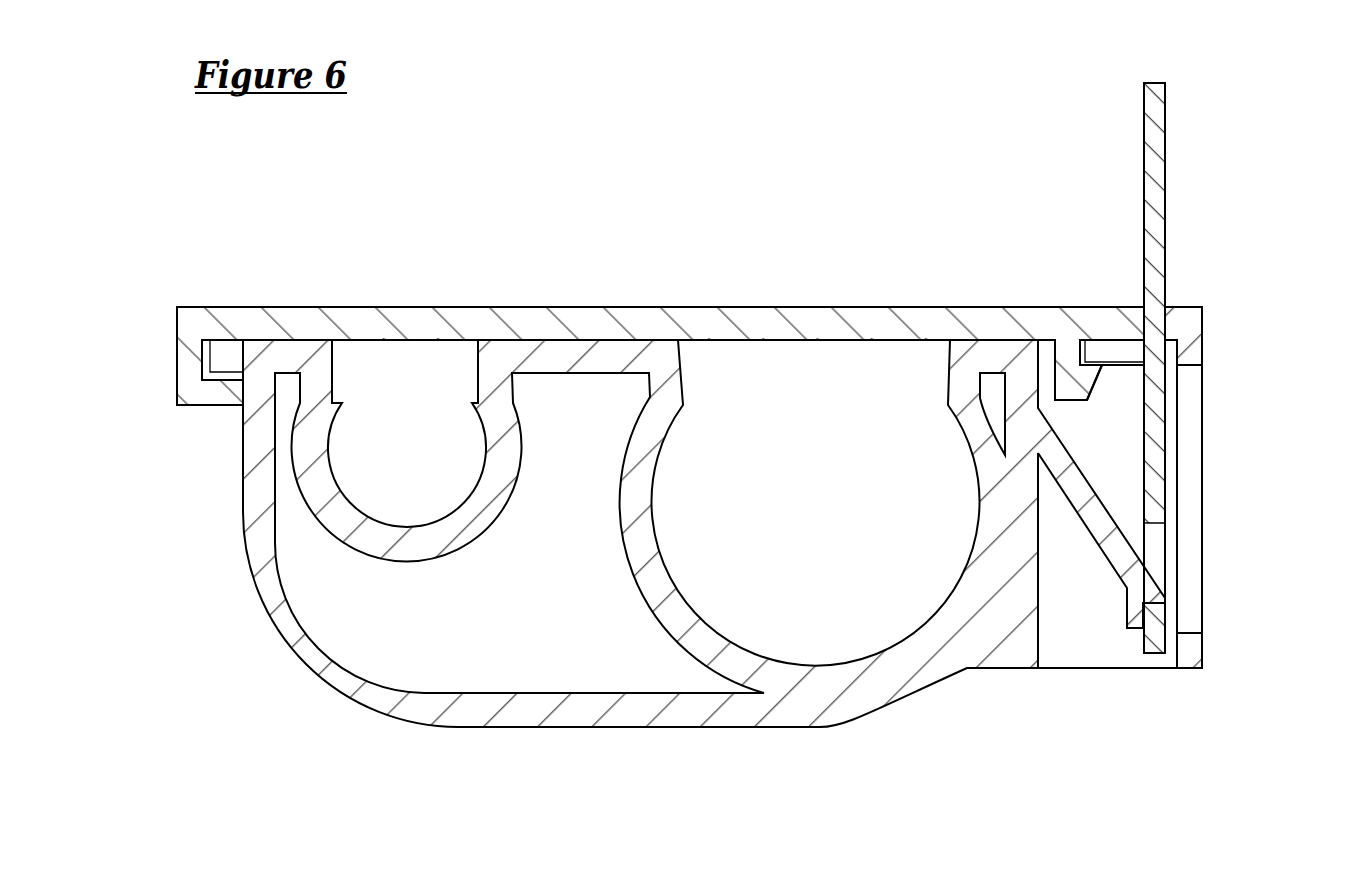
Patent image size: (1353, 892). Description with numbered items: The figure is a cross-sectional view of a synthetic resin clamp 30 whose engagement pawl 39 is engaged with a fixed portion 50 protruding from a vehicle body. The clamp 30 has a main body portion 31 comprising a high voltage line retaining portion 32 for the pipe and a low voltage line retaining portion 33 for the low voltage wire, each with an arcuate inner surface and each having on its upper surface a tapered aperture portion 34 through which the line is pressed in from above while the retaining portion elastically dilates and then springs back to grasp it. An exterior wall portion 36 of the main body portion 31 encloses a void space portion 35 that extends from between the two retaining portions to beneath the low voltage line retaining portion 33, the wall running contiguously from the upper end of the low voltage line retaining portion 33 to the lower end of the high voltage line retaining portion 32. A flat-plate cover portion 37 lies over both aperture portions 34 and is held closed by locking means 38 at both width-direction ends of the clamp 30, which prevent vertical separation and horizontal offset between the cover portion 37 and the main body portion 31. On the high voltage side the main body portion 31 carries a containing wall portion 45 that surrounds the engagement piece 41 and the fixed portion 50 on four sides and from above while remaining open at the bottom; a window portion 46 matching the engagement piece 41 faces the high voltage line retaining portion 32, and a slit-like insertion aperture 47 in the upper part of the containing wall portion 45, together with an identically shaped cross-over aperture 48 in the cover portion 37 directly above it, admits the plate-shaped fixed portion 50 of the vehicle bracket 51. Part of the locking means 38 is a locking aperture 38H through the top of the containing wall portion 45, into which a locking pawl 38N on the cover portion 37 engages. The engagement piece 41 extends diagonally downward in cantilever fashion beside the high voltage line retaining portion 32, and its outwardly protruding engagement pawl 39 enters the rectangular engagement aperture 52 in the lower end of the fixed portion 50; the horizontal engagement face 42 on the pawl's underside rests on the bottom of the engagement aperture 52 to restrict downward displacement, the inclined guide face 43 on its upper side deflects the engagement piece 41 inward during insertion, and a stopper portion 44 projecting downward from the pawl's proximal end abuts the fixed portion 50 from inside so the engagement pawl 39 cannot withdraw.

The clamp 30 is at (628, 150).
The main body portion 31 is at (815, 727).
The high voltage line retaining portion 32 is at (670, 617).
The low voltage line retaining portion 33 is at (393, 553).
The aperture portion 34 is at (482, 370).
The void space portion 35 is at (522, 600).
The exterior wall portion 36 is at (412, 705).
The cover portion 37 is at (818, 322).
The locking means 38 is at (218, 383).
The locking aperture 38H is at (1083, 352).
The locking pawl 38N is at (1088, 382).
The engagement pawl 39 is at (1162, 596).
The engagement piece 41 is at (1098, 532).
The engagement face 42 is at (1167, 628).
The guide face 43 is at (1158, 572).
The stopper portion 44 is at (1135, 623).
The containing wall portion 45 is at (1102, 423).
The window portion 46 is at (1190, 515).
The insertion aperture 47 is at (1173, 340).
The cross-over aperture 48 is at (1170, 313).
The fixed portion 50 is at (1157, 653).
The vehicle bracket 51 is at (1157, 104).
The engagement aperture 52 is at (1153, 543).